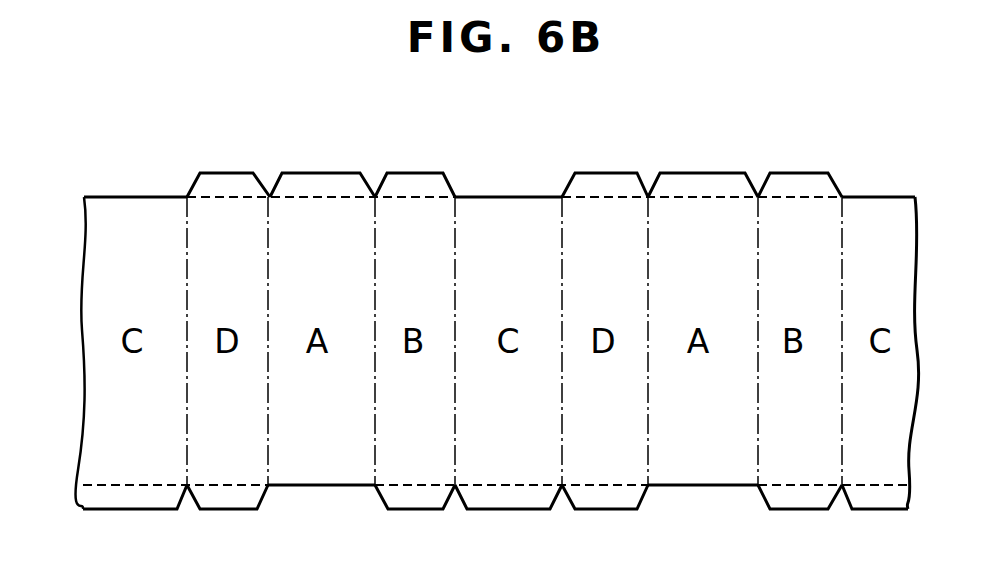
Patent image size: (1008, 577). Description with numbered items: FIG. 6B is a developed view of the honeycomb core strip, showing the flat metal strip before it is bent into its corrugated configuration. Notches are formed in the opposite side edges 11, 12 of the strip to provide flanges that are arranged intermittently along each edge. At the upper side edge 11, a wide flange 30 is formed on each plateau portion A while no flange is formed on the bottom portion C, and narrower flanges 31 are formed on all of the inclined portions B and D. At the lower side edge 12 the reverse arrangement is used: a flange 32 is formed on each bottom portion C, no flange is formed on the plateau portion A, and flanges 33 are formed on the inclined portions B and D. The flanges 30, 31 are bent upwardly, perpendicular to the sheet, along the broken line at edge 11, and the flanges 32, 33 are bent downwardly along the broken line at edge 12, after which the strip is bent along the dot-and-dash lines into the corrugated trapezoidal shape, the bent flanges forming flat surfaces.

The side edge 11 is at (128, 194).
The side edge 12 is at (93, 512).
The flange 30 is at (313, 172).
The flange 31 is at (217, 172).
The flange 32 is at (150, 512).
The flange 33 is at (220, 512).